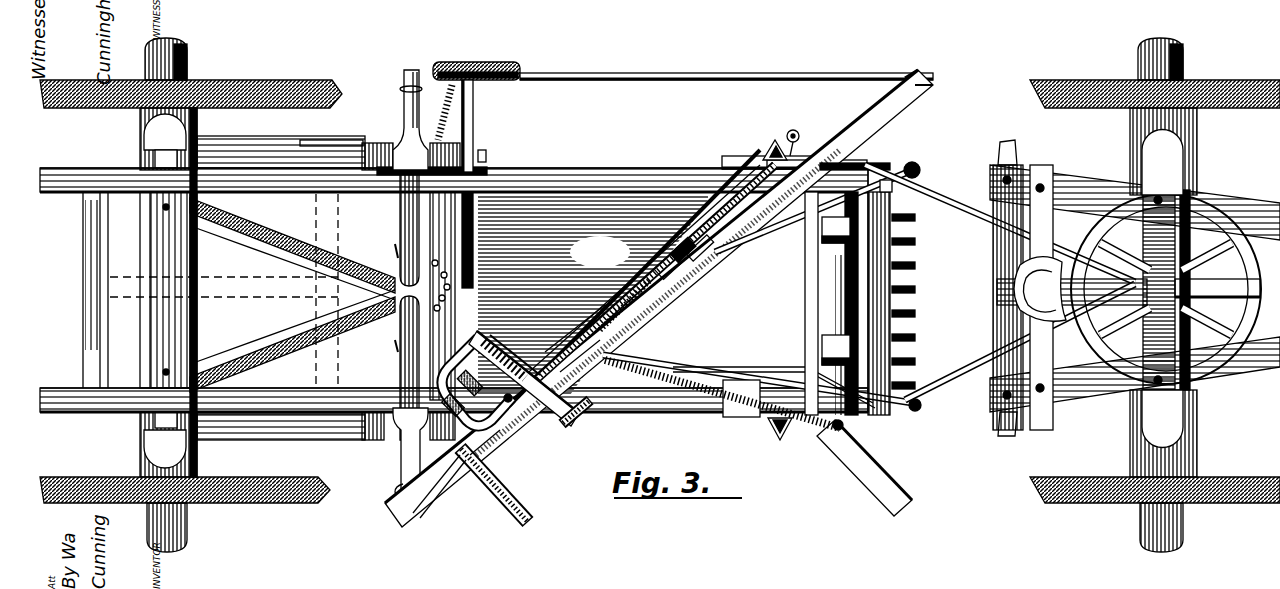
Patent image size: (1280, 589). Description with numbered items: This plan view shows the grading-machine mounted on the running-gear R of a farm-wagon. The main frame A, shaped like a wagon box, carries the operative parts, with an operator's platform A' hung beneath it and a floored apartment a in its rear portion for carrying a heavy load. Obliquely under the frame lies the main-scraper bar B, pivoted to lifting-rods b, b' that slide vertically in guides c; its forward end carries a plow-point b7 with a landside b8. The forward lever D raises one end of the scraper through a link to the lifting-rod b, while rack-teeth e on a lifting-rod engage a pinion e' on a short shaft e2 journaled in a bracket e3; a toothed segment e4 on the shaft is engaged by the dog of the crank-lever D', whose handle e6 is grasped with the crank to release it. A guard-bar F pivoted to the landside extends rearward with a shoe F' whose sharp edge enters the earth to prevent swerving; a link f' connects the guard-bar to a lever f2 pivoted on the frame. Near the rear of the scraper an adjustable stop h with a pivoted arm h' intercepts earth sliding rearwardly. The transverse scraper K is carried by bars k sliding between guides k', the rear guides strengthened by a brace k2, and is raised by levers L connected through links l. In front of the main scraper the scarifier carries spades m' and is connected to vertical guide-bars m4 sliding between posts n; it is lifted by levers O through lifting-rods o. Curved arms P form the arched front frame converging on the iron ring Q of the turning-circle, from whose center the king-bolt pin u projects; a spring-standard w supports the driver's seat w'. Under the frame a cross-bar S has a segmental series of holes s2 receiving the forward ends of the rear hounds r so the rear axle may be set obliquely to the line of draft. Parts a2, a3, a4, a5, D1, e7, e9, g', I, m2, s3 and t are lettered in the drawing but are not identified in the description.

The main frame A is at (454, 290).
The operator's platform A' is at (593, 295).
The floored apartment a is at (236, 277).
The tongue plate a2 is at (635, 277).
The tongue rod a3 is at (660, 300).
The tongue pin a4 is at (706, 262).
The tongue collar a5 is at (668, 254).
The main-scraper bar B is at (405, 512).
The lifting-rod b is at (495, 452).
The lifting-rod b' is at (775, 140).
The plow-point b7 is at (918, 84).
The landside b8 is at (911, 65).
The guide c is at (766, 156).
The forward lever D is at (652, 275).
The crank-lever D' is at (524, 396).
The rack D1 is at (504, 348).
The rack-teeth e is at (491, 405).
The pinion e' is at (443, 401).
The short shaft e2 is at (500, 403).
The bracket e3 is at (457, 374).
The segment e4 is at (580, 356).
The handle e6 is at (582, 398).
The clamp link e7 is at (575, 328).
The clamp rod e9 is at (515, 350).
The guard-bar F is at (726, 67).
The shoe F' is at (476, 61).
The link f' is at (475, 126).
The lever f2 is at (484, 158).
The ring g' is at (801, 137).
The adjustable stop h is at (496, 485).
The arm h' is at (442, 486).
The lever I is at (758, 438).
The transverse scraper K is at (394, 286).
The bar k is at (403, 265).
The guide k' is at (406, 292).
The brace k2 is at (330, 440).
The lever L is at (400, 209).
The rod or link l is at (390, 489).
The spade or cutter m' is at (881, 289).
The tine bar m2 is at (893, 196).
The vertical guide-bar m4 is at (822, 243).
The post n is at (806, 196).
The lever O is at (758, 287).
The lifting-rod o is at (919, 400).
The curved arm P is at (1000, 281).
The iron ring Q is at (1170, 290).
The running-gear R is at (197, 450).
The rear hounds r is at (292, 295).
The cross-bar S is at (451, 296).
The segmental series of holes s2 is at (387, 349).
The pin s3 is at (387, 248).
The bracket t is at (993, 295).
The pin u is at (1166, 291).
The spring-standard w is at (1128, 292).
The driver's seat w' is at (1040, 289).